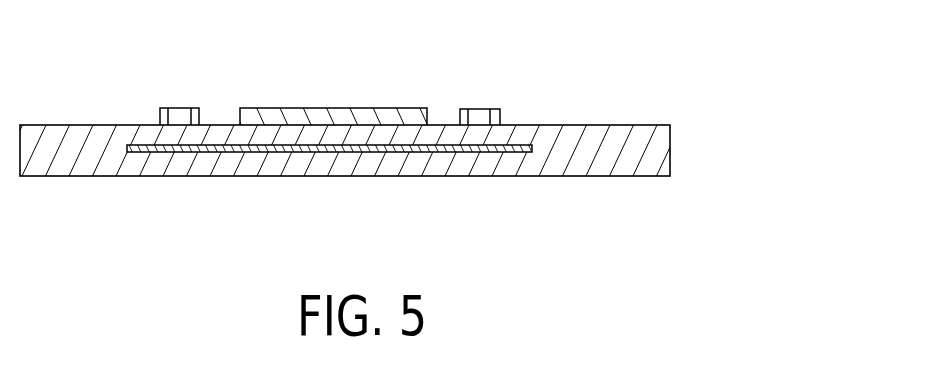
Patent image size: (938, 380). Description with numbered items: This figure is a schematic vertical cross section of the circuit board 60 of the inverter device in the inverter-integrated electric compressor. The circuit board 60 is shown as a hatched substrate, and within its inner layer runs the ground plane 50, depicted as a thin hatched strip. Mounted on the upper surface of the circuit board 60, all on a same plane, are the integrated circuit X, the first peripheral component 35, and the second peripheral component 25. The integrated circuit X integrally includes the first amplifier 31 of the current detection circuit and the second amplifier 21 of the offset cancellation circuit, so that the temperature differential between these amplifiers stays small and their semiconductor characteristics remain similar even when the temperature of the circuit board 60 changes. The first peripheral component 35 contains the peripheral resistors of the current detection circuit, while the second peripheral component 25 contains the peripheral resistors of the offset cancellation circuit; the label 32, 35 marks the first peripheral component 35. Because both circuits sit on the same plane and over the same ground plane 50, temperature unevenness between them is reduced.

The circuit board 60 is at (670, 147).
The ground plane 50 is at (330, 152).
The electrode terminal 32 is at (142, 63).
The first peripheral component 35 is at (179, 116).
The first amplifier 31 is at (330, 64).
The second amplifier 21 is at (323, 96).
The second peripheral component 25 is at (509, 86).